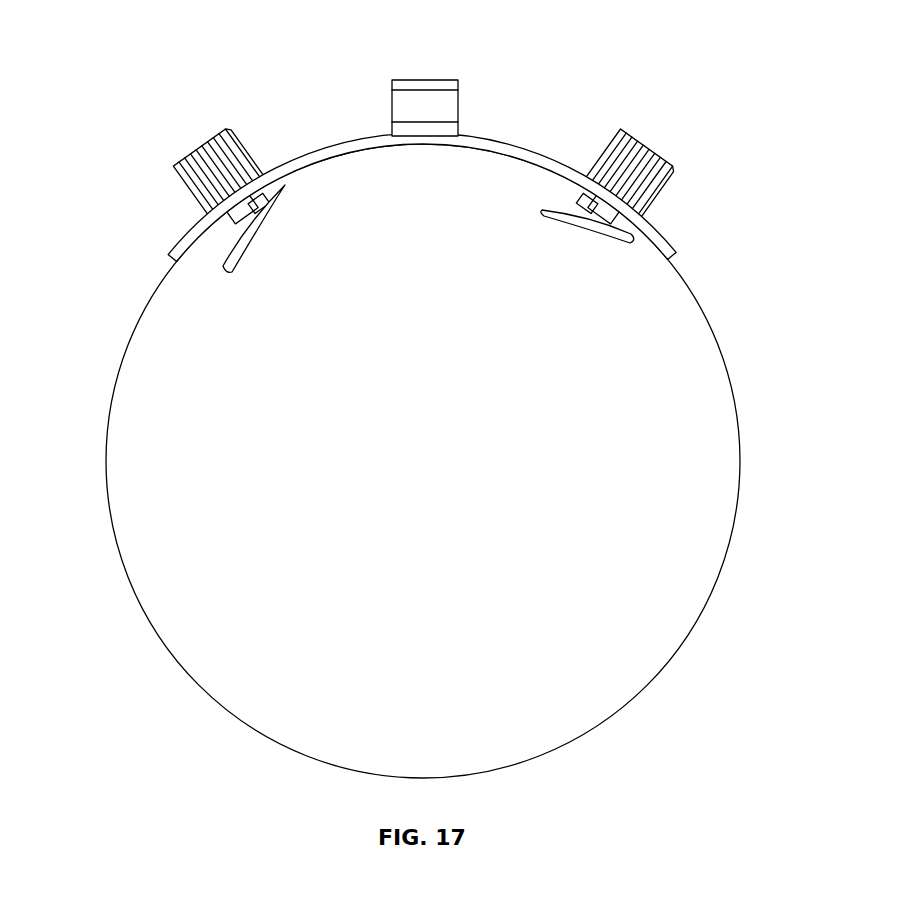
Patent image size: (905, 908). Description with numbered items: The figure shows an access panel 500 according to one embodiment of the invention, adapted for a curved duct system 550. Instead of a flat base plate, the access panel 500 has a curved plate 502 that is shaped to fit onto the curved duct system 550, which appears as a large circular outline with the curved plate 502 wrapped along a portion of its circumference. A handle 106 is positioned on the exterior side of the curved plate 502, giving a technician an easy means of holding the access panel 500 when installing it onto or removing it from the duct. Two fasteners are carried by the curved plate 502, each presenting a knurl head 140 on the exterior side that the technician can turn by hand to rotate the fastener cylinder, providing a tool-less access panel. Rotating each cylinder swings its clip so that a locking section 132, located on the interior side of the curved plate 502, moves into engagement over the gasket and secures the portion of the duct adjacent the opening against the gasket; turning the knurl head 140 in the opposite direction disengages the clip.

The access panel 500 is at (135, 53).
The curved duct system 550 is at (706, 351).
The curved plate 502 is at (527, 150).
The handle 106 is at (421, 79).
The knurl head 140 is at (244, 145).
The locking section 132 is at (250, 244).